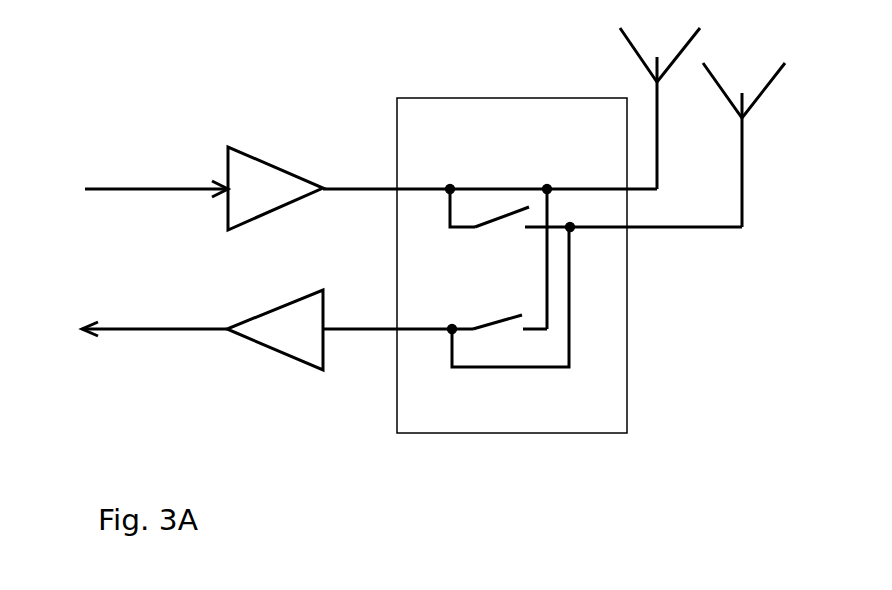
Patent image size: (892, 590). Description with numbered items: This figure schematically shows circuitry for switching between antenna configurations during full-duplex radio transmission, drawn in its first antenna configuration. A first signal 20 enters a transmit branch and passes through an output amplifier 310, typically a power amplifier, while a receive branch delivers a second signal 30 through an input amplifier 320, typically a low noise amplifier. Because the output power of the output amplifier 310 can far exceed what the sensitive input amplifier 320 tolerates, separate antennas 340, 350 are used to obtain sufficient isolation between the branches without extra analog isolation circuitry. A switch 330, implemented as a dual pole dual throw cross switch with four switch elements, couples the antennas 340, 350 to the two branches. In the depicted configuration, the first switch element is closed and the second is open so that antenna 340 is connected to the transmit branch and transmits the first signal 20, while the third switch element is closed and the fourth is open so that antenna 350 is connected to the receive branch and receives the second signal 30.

The first signal 20 is at (135, 182).
The second signal 30 is at (138, 323).
The output amplifier 310 is at (272, 162).
The input amplifier 320 is at (272, 350).
The switch 330 is at (505, 97).
The antenna 340 is at (660, 160).
The antenna 350 is at (745, 190).